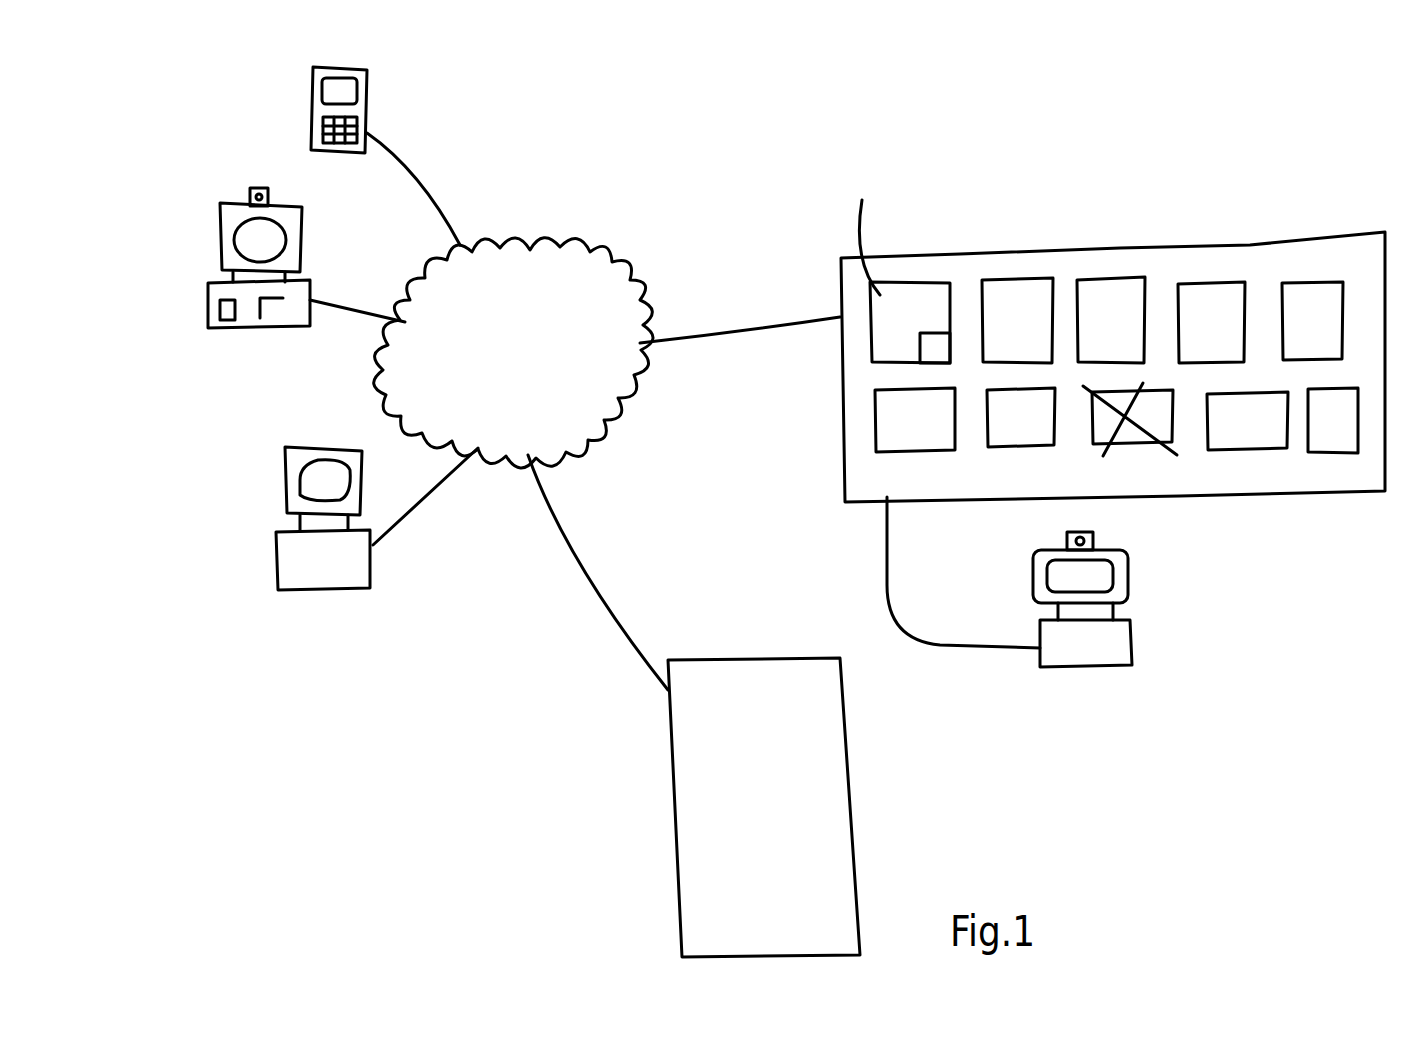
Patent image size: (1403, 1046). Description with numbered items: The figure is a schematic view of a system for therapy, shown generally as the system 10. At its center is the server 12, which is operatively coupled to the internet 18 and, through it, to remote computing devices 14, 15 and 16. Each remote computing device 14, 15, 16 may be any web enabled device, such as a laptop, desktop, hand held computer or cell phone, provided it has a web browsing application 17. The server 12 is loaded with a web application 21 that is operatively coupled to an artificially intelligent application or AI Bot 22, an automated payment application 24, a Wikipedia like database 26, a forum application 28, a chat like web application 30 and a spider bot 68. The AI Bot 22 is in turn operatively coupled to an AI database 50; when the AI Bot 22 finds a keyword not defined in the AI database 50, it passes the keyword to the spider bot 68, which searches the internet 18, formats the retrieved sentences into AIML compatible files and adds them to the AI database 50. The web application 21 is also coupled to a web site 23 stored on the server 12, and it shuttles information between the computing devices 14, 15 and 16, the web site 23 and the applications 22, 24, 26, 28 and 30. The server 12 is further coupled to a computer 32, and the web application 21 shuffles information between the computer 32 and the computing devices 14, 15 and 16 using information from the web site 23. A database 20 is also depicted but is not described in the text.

The system for therapy 10 is at (743, 163).
The server 12 is at (928, 248).
The remote computing device 14 is at (210, 287).
The remote computing device 15 is at (308, 83).
The remote computing device 16 is at (278, 555).
The web browsing application 17 is at (222, 320).
The internet 18 is at (514, 245).
The database 20 is at (745, 656).
The web application 21 is at (915, 420).
The artificially intelligent application 22 is at (910, 322).
The web site 23 is at (1021, 417).
The automated payment application 24 is at (1017, 320).
The Wikipedia like database 26 is at (1111, 320).
The forum application 28 is at (1211, 322).
The chat like web application 30 is at (1312, 321).
The computer 32 is at (1133, 628).
The AI database 50 is at (1333, 420).
The spider bot 68 is at (1247, 421).